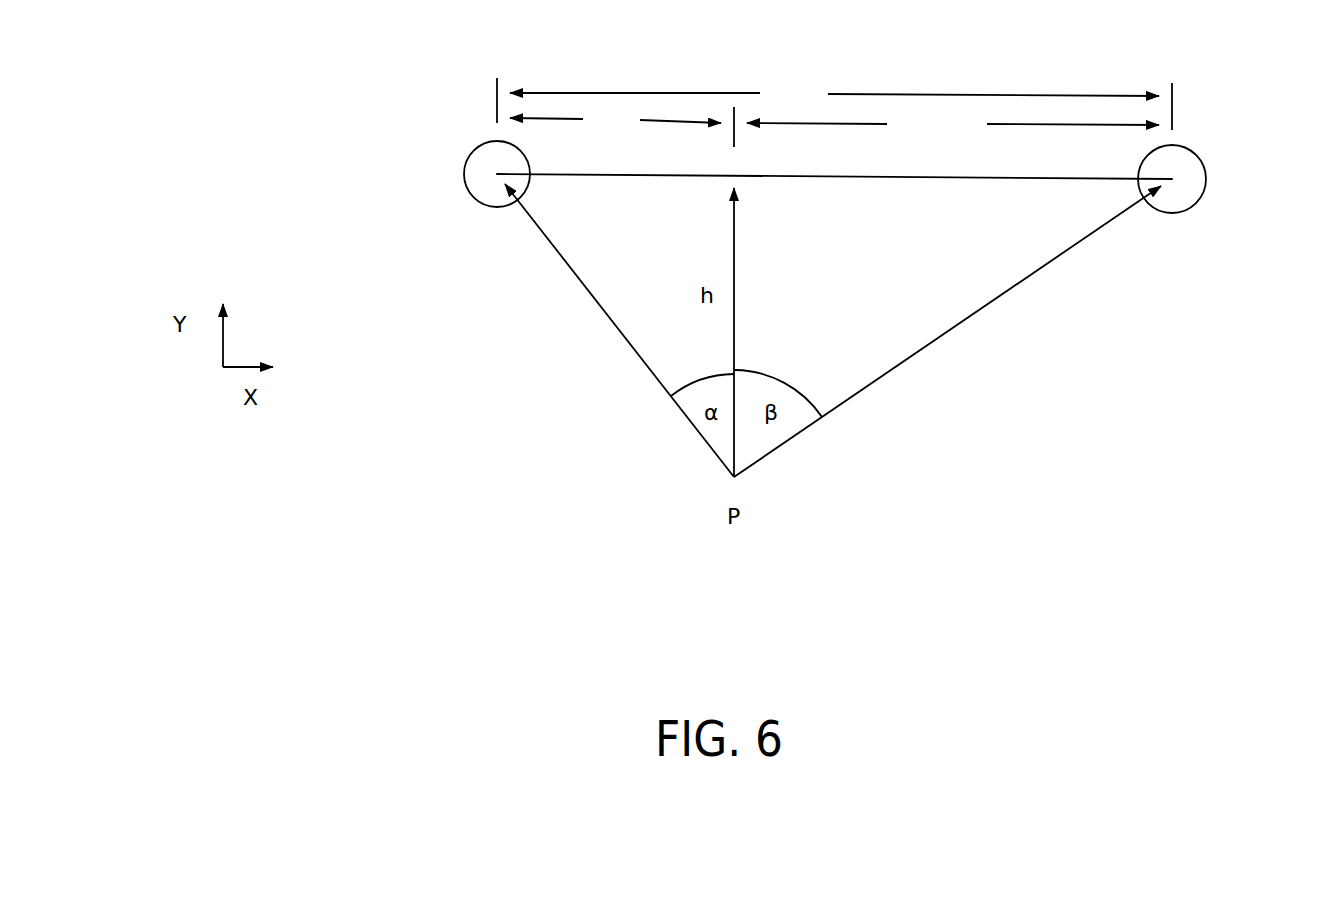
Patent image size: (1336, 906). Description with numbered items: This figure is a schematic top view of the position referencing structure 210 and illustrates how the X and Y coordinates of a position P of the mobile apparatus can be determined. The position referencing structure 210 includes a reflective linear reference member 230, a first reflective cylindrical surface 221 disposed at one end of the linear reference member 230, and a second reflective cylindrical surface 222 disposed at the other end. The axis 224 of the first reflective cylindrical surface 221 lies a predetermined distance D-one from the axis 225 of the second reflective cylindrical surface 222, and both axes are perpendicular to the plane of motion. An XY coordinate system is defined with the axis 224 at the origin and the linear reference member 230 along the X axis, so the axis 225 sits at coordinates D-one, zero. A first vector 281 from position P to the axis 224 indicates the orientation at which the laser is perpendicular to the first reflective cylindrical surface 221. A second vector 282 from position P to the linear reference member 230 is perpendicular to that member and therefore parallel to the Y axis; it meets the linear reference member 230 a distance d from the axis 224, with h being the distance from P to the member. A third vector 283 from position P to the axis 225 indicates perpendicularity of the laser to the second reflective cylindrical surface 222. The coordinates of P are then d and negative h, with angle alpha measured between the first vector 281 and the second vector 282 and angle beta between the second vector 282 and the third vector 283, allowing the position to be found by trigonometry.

The position referencing structure 210 is at (428, 108).
The first reflective cylindrical surface 221 is at (488, 210).
The second reflective cylindrical surface 222 is at (1167, 215).
The axis of the first reflective cylindrical surface 224 is at (495, 168).
The axis of the second reflective cylindrical surface 225 is at (1177, 172).
The reflective linear reference member 230 is at (865, 178).
The first vector 281 is at (588, 292).
The second vector 282 is at (737, 233).
The third vector 283 is at (1028, 282).